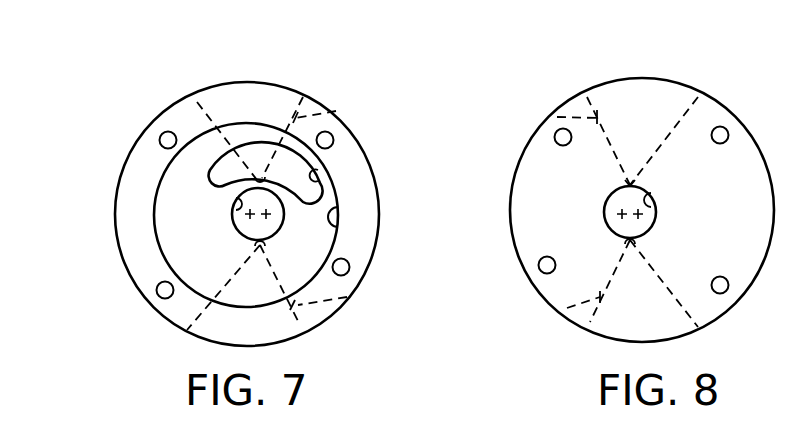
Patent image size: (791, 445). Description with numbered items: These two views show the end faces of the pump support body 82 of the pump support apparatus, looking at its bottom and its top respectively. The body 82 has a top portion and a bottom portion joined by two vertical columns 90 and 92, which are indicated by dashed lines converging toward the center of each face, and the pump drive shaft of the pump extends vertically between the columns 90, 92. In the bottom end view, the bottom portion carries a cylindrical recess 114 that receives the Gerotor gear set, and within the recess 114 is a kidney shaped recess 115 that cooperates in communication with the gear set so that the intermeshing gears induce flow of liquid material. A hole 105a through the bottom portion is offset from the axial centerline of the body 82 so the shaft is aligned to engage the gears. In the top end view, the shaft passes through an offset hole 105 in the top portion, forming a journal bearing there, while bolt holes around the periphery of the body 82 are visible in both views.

In FIG. 7, the pump support body 82 is at (222, 70).
In FIG. 8, the pump support body 82 is at (685, 73).
In FIG. 7, the vertical column 90 is at (336, 111).
In FIG. 8, the vertical column 90 is at (557, 117).
In FIG. 7, the vertical column 92 is at (347, 297).
In FIG. 8, the vertical column 92 is at (567, 308).
In FIG. 8, the hole 105 is at (656, 207).
In FIG. 7, the hole 105a is at (240, 198).
In FIG. 7, the cylindrical recess 114 is at (337, 232).
In FIG. 7, the kidney shaped recess 115 is at (300, 188).